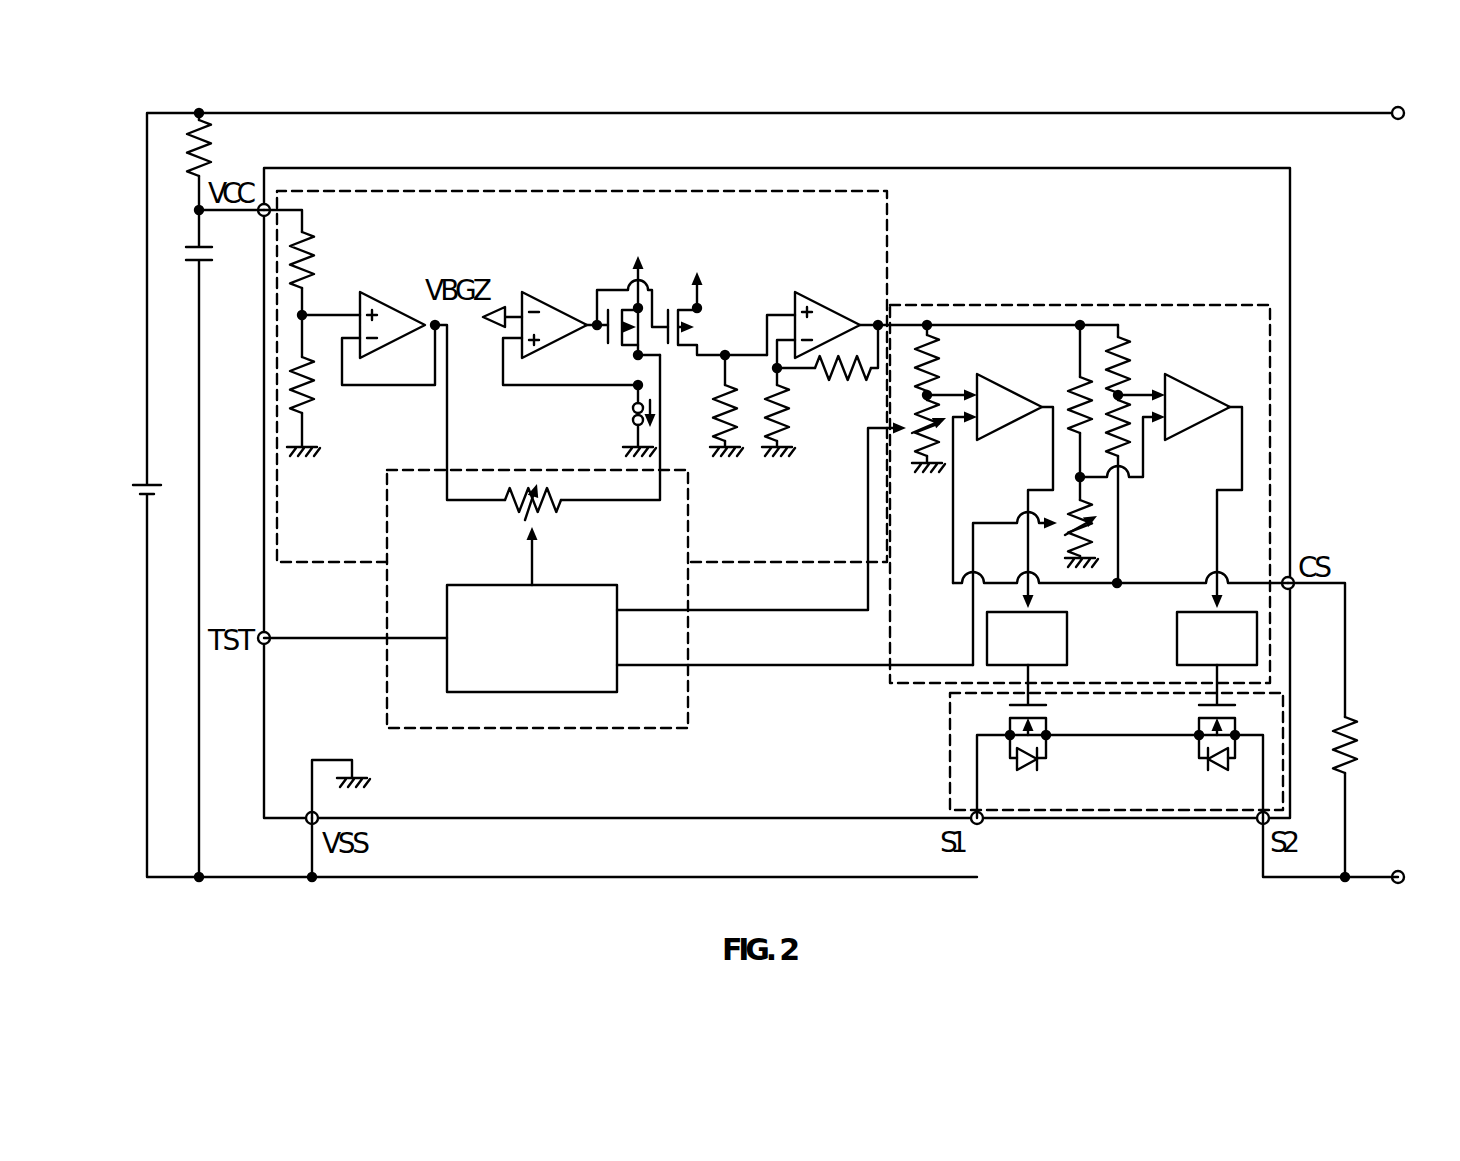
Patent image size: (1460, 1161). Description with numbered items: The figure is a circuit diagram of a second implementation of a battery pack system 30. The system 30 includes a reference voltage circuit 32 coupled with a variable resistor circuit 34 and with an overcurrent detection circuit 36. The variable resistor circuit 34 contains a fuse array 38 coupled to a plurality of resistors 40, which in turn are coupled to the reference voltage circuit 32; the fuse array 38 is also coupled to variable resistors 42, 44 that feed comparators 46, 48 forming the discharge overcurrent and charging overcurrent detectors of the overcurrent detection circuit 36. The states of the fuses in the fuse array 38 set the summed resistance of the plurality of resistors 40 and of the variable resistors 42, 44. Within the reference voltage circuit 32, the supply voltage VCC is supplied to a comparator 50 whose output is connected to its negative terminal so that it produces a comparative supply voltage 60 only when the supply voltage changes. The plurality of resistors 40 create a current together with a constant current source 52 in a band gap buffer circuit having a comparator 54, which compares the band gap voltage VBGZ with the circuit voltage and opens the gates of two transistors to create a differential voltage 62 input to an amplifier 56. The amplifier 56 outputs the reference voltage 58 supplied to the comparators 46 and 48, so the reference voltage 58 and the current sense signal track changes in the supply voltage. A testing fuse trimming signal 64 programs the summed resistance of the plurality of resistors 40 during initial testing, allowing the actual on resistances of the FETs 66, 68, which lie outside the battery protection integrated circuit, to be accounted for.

The battery pack system 30 is at (145, 102).
The reference voltage circuit 32 is at (888, 214).
The variable resistor circuit 34 is at (690, 690).
The overcurrent detection circuit 36 is at (1197, 305).
The fuse array 38 is at (482, 584).
The plurality of resistors 40 is at (540, 508).
The variable resistor 42 is at (912, 425).
The variable resistor 44 is at (1100, 538).
The comparator 46 is at (1010, 428).
The comparator 48 is at (1200, 428).
The comparator 50 is at (397, 305).
The constant current source 52 is at (628, 413).
The comparator 54 is at (553, 306).
The amplifier 56 is at (822, 302).
The reference voltage 58 is at (905, 322).
The comparative supply voltage 60 is at (446, 442).
The differential voltage 62 is at (768, 312).
The testing fuse trimming signal 64 is at (318, 640).
The FET 66 is at (1049, 725).
The FET 68 is at (1196, 725).